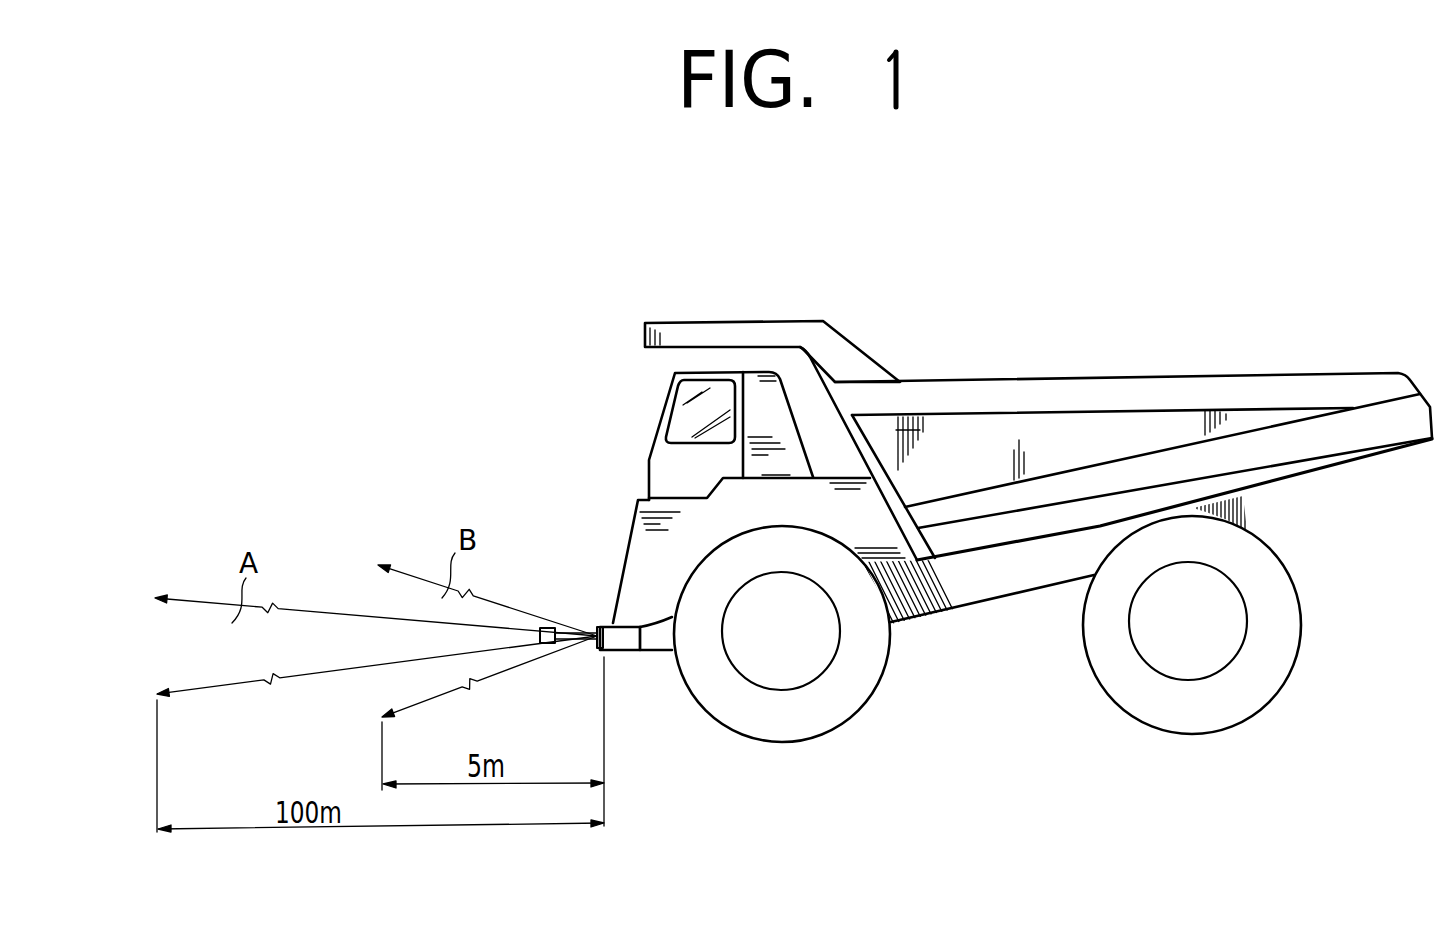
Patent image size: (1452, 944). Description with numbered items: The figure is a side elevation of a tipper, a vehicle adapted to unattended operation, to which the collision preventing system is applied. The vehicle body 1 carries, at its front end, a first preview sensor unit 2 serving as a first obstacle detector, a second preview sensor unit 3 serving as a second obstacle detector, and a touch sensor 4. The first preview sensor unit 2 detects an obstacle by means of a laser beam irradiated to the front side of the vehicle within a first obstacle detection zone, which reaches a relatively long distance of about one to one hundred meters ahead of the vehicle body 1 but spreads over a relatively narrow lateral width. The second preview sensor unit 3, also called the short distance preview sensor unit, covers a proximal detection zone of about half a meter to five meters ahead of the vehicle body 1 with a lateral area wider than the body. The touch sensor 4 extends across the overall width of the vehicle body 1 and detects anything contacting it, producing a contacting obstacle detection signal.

The vehicle body 1 is at (938, 606).
The first preview sensor unit 2 is at (597, 629).
The second preview sensor unit 3 is at (591, 652).
The touch sensor 4 is at (540, 645).